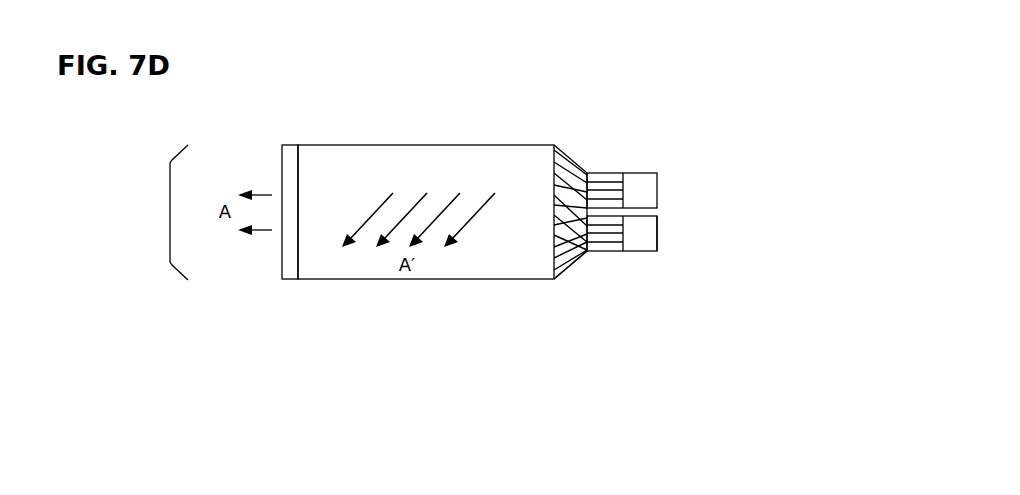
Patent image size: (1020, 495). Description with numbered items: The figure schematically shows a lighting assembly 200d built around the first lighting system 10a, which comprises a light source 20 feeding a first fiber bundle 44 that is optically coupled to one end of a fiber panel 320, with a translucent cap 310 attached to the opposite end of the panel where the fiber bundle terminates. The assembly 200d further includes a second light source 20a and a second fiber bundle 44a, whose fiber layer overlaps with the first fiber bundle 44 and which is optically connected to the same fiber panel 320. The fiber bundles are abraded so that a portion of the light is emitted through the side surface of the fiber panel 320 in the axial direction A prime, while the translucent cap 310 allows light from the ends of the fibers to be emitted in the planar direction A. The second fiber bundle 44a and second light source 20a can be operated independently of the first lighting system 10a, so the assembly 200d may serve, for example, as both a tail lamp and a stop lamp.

The lighting assembly 200d is at (170, 212).
The cap 310 is at (288, 281).
The fiber panel 320 is at (548, 281).
The first fiber bundle 44 is at (570, 155).
The second fiber bundle 44a is at (572, 260).
The light source 20 is at (657, 170).
The second light source 20a is at (655, 258).
The first lighting system 10a is at (690, 163).